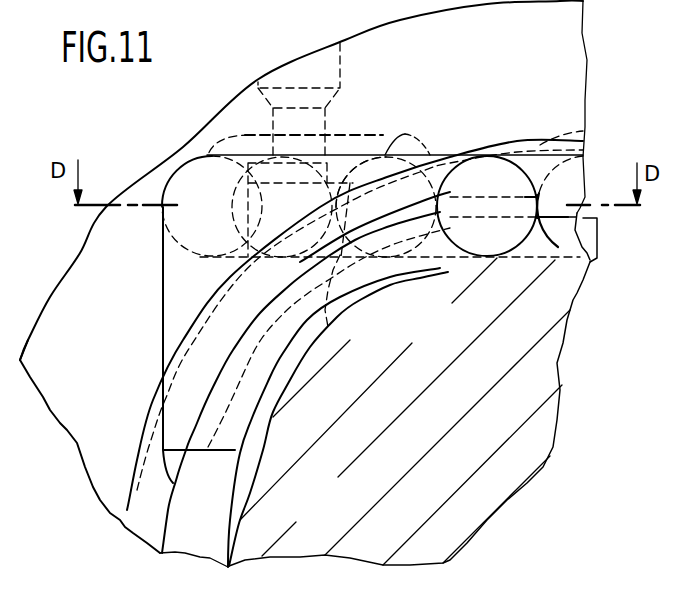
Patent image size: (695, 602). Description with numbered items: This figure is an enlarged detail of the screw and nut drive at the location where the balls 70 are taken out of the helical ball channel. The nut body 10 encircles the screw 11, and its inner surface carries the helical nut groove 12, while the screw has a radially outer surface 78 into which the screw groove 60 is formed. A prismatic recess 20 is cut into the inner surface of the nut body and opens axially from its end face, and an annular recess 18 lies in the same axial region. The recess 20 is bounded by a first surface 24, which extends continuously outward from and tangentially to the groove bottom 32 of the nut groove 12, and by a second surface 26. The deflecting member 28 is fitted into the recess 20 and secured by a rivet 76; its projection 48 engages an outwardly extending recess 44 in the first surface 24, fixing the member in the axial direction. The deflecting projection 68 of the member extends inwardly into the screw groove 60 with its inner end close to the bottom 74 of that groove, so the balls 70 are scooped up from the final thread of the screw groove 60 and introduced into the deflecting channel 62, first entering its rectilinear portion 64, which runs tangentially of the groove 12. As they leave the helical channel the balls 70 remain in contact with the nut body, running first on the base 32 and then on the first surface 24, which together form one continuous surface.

The nut body 10 is at (577, 62).
The screw 11 is at (409, 412).
The nut groove 12 is at (553, 175).
The annular recess 18 is at (125, 522).
The prismatic recess 20 is at (163, 288).
The first surface 24 is at (388, 133).
The second surface 26 is at (157, 347).
The deflecting member 28 is at (178, 402).
The groove bottom 32 is at (545, 142).
The recess 44 is at (369, 128).
The projection 48 is at (343, 143).
The screw groove 60 is at (237, 567).
The deflecting channel 62 is at (328, 327).
The rectilinear portion 64 is at (404, 265).
The deflecting projection 68 is at (432, 243).
The balls 70 is at (560, 253).
The bottom of the groove 74 is at (235, 498).
The rivet 76 is at (298, 103).
The radially outer surface 78 is at (185, 549).